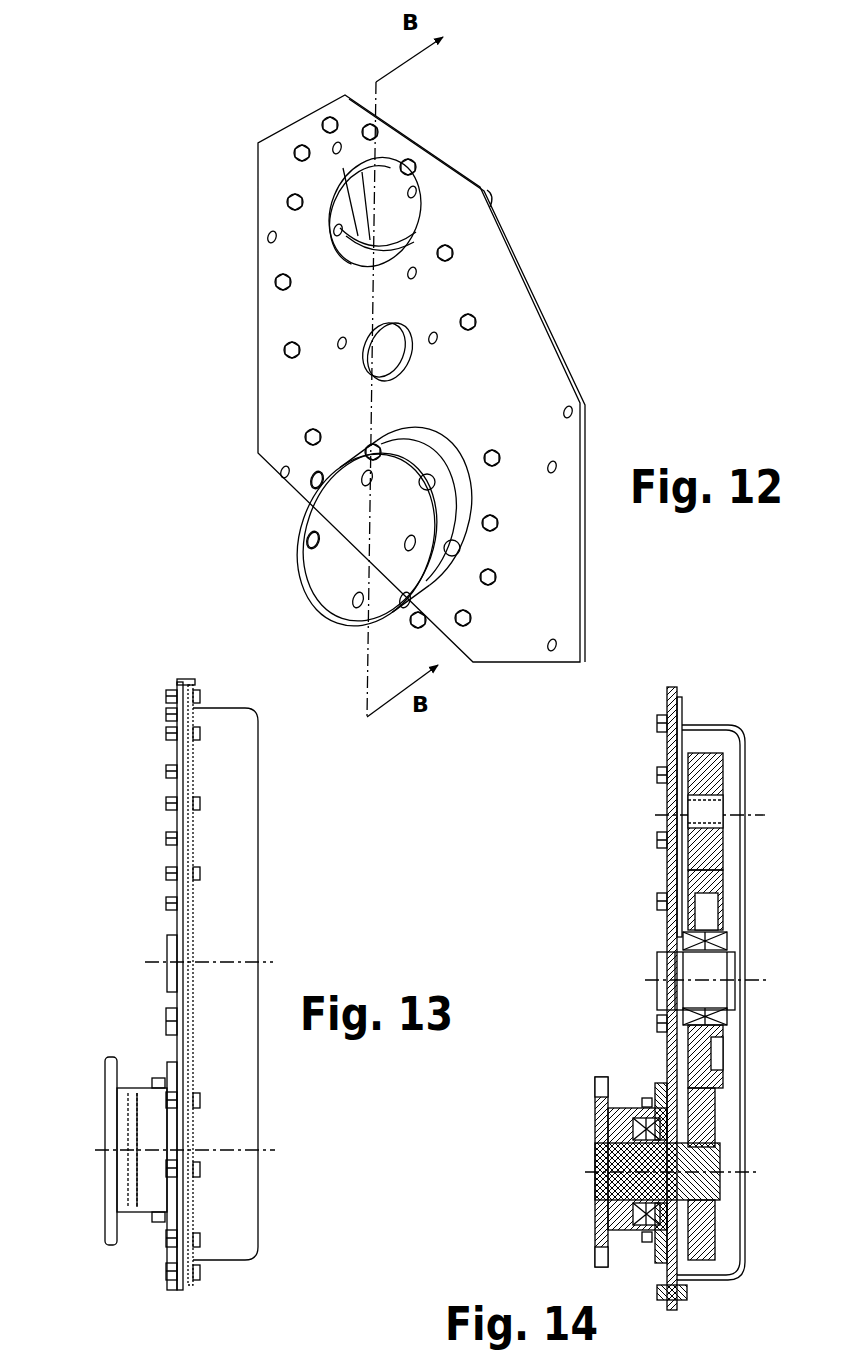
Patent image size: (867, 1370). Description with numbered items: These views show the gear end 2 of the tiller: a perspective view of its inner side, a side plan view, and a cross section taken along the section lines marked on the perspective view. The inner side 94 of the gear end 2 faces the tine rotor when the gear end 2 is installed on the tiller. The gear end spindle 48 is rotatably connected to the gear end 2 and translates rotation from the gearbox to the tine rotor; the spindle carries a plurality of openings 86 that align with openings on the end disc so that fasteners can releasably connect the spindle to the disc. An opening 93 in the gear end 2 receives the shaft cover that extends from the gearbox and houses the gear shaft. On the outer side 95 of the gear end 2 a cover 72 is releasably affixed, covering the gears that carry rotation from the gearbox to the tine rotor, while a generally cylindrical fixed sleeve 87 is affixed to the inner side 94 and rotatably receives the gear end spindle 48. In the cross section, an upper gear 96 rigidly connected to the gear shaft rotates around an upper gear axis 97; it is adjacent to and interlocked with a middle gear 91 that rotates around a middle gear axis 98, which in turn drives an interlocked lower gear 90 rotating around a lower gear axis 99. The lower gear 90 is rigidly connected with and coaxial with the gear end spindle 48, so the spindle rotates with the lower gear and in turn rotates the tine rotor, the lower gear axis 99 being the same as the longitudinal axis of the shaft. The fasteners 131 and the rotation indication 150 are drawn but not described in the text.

In FIG. 12, the gear end 2 is at (503, 148).
In FIG. 13, the gear end 2 is at (82, 798).
In FIG. 14, the gear end 2 is at (614, 788).
In FIG. 12, the gear end spindle 48 is at (352, 523).
In FIG. 13, the gear end spindle 48 is at (110, 1085).
In FIG. 14, the gear end spindle 48 is at (600, 1160).
In FIG. 13, the cover 72 is at (250, 812).
In FIG. 14, the cover 72 is at (748, 768).
In FIG. 12, the openings 86 is at (315, 480).
In FIG. 13, the fixed sleeve 87 is at (152, 1183).
In FIG. 14, the fixed sleeve 87 is at (632, 1225).
In FIG. 14, the lower gear 90 is at (700, 1105).
In FIG. 14, the middle gear 91 is at (715, 1035).
In FIG. 12, the opening 93 is at (350, 240).
In FIG. 12, the inner side 94 is at (480, 413).
In FIG. 13, the inner side 94 is at (177, 918).
In FIG. 13, the outer side 95 is at (188, 680).
In FIG. 14, the upper gear 96 is at (722, 866).
In FIG. 14, the upper gear axis 97 is at (750, 815).
In FIG. 14, the middle gear axis 98 is at (750, 982).
In FIG. 14, the lower gear axis 99 is at (750, 1172).
In FIG. 12, the fasteners 131 is at (432, 484).
In FIG. 12, the rotation direction arrow 150 is at (376, 510).